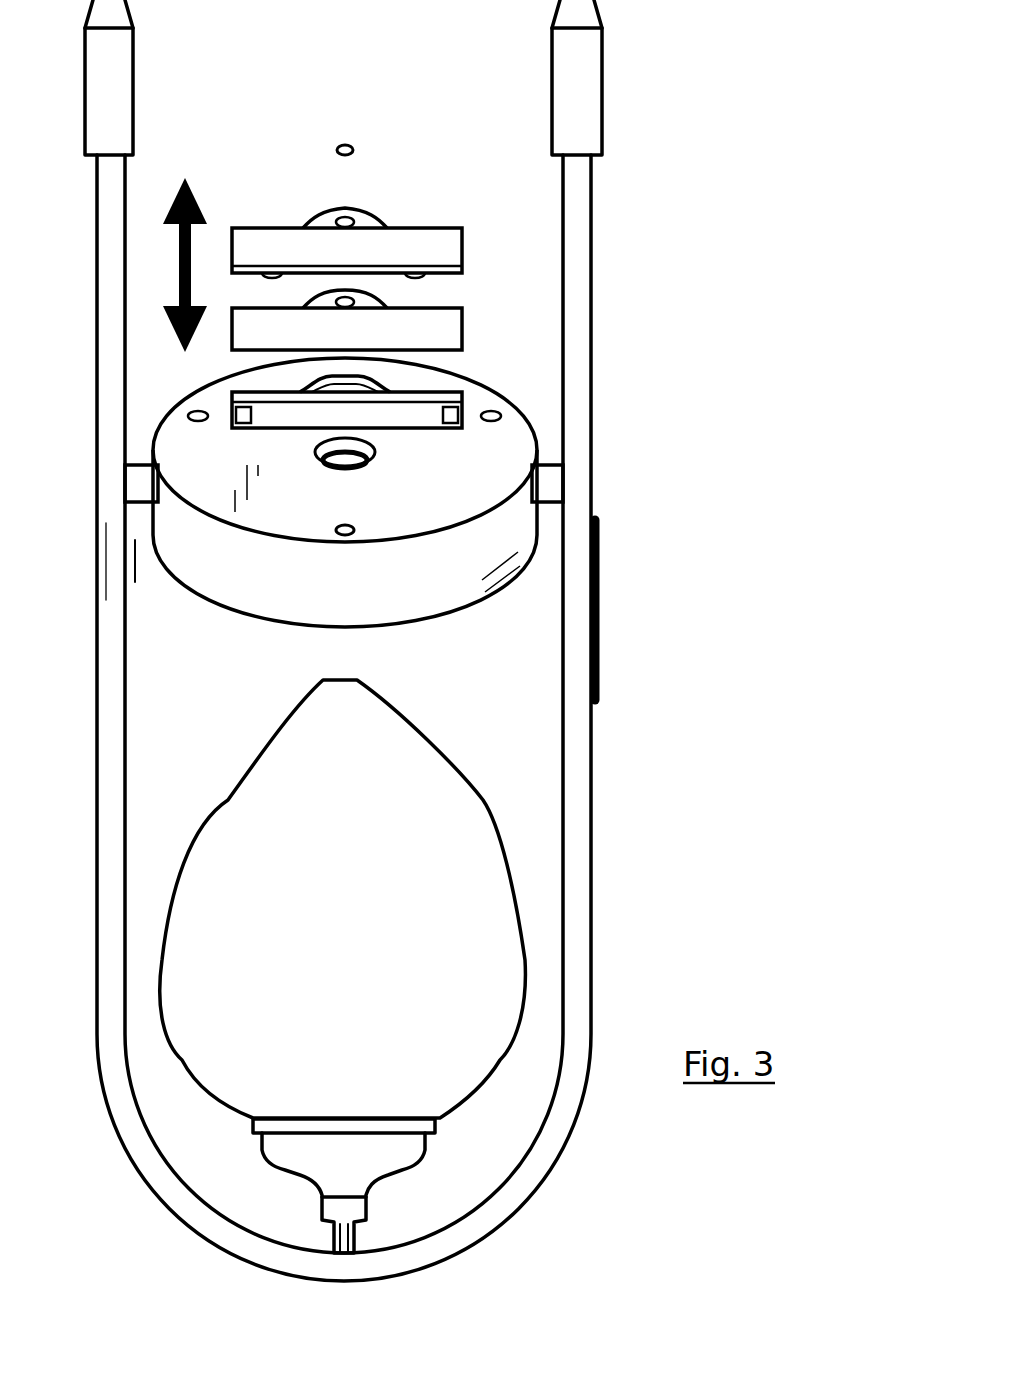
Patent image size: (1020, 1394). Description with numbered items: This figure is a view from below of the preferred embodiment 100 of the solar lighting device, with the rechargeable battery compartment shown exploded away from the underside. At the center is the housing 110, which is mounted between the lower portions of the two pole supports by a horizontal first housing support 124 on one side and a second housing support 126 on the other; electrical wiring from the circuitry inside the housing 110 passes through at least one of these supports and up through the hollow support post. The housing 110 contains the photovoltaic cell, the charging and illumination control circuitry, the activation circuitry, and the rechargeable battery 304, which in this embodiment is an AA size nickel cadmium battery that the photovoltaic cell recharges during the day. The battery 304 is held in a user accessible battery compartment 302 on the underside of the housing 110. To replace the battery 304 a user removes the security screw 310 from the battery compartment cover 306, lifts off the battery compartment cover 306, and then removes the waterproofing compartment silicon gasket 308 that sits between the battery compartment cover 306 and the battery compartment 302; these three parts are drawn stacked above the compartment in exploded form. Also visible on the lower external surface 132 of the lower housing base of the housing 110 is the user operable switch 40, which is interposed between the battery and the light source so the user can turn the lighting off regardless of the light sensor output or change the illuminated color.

The preferred embodiment 100 is at (655, 184).
The housing 110 is at (512, 520).
The first housing support 124 is at (148, 487).
The second housing support 126 is at (548, 490).
The user operable switch 40 is at (347, 460).
The lower external surface of the lower housing base 132 is at (397, 493).
The battery compartment 302 is at (265, 400).
The rechargeable battery 304 is at (428, 412).
The battery compartment cover 306 is at (400, 246).
The waterproofing compartment silicon gasket 308 is at (409, 320).
The security screw 310 is at (346, 147).